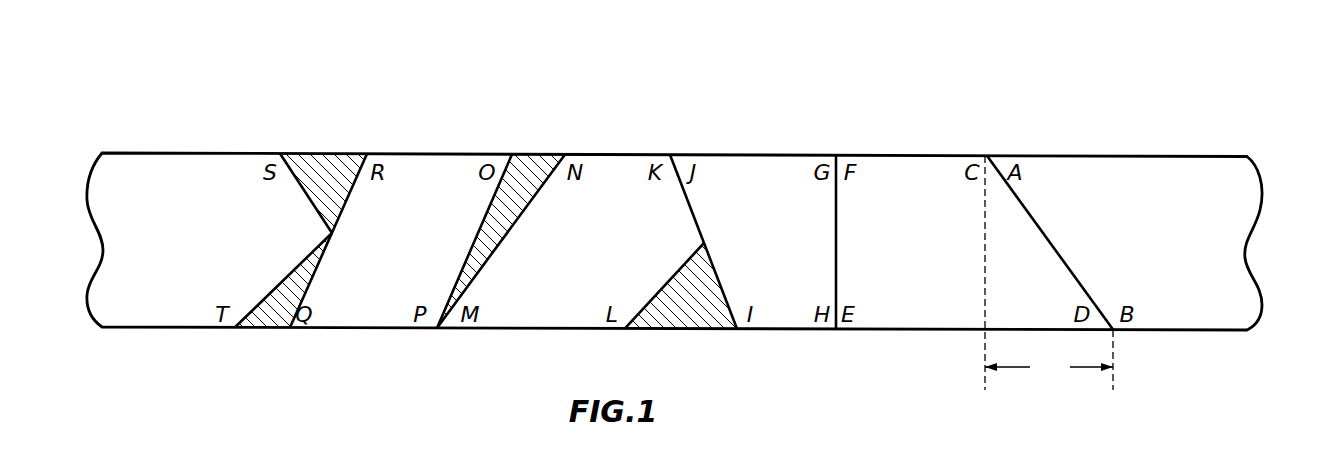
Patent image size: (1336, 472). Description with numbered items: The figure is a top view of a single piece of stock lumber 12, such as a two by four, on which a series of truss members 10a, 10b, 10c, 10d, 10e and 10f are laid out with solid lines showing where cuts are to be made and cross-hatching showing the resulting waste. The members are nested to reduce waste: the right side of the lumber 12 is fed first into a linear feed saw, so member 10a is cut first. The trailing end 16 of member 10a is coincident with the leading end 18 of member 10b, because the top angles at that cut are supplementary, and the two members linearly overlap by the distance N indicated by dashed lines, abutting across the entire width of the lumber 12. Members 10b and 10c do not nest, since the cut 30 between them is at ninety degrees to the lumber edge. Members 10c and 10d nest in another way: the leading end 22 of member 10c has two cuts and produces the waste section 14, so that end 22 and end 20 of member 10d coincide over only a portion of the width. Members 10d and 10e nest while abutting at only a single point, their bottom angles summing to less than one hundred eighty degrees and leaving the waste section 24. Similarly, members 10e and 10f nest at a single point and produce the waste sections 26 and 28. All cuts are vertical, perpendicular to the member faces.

The piece of lumber 12 is at (1250, 114).
The waste lumber 14 is at (717, 323).
The trailing end 16 is at (1067, 257).
The leading end 18 is at (1037, 232).
The member end 20 is at (728, 278).
The leading end 22 is at (697, 213).
The waste section 24 is at (533, 158).
The waste section 26 is at (340, 158).
The waste section 28 is at (257, 323).
The cut 30 is at (838, 227).
The truss member 10a is at (1145, 259).
The truss member 10b is at (905, 257).
The truss member 10c is at (755, 257).
The truss member 10d is at (568, 257).
The truss member 10e is at (378, 256).
The truss member 10f is at (172, 256).